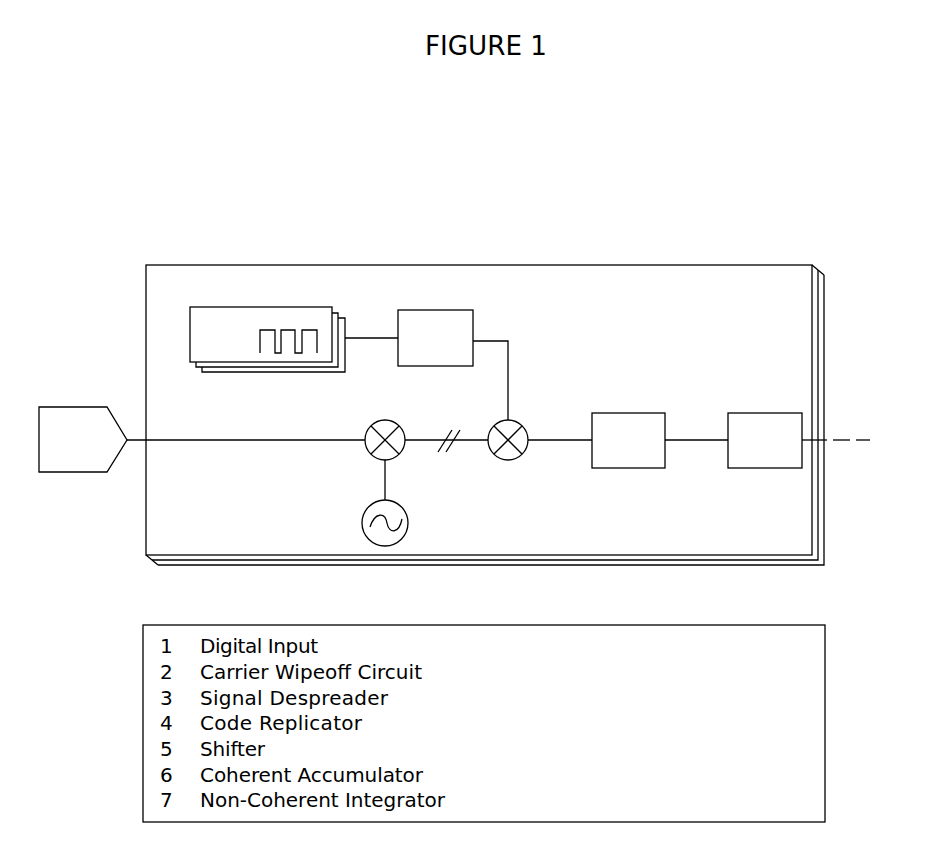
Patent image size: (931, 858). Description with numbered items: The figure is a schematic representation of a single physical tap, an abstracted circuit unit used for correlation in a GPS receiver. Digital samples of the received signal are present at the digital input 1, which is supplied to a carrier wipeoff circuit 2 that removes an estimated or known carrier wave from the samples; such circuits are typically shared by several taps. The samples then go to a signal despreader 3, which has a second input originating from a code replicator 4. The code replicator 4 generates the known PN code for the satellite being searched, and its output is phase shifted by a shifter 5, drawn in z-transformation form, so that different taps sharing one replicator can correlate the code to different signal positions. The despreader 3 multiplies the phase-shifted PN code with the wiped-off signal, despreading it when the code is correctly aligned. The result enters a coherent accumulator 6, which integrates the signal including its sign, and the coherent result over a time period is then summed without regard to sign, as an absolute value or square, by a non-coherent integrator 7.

The digital input 1 is at (83, 416).
The carrier wipeoff circuit 2 is at (357, 470).
The signal despreader 3 is at (483, 427).
The code replicator 4 is at (252, 326).
The shifter 5 is at (420, 324).
The coherent accumulator 6 is at (609, 431).
The non-coherent integrator 7 is at (747, 430).